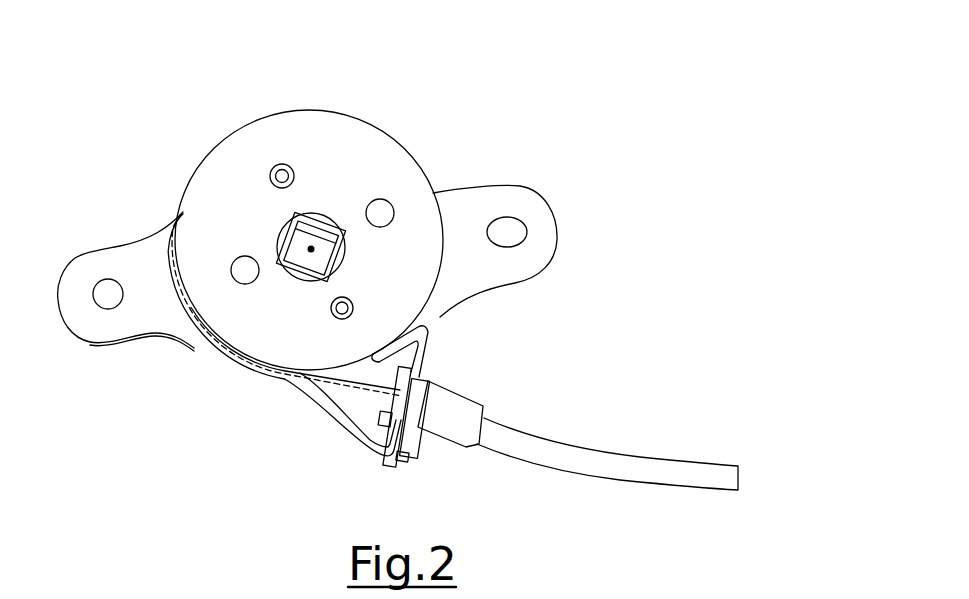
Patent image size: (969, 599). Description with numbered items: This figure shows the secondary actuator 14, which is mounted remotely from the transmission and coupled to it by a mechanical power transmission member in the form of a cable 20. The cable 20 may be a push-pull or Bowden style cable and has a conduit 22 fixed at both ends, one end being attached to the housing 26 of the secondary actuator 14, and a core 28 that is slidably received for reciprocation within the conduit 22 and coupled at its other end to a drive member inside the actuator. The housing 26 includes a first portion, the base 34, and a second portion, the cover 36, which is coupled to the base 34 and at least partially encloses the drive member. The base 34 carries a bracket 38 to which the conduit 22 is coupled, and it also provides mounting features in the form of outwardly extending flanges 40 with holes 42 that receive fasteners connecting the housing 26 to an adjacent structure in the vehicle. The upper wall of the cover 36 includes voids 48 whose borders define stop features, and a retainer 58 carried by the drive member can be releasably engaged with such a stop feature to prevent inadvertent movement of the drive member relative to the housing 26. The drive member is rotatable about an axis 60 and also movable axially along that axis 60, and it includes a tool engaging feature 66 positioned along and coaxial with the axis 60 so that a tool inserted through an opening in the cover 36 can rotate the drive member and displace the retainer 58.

The secondary actuator 14 is at (454, 102).
The cable 20 is at (643, 446).
The conduit 22 is at (535, 447).
The housing 26 is at (201, 149).
The core 28 is at (352, 380).
The base 34 is at (178, 330).
The cover 36 is at (318, 132).
The bracket 38 is at (422, 362).
The flanges 40 is at (95, 252).
The holes 42 is at (103, 298).
The voids 48 is at (380, 213).
The retainer 58 is at (284, 166).
The axis 60 is at (311, 249).
The tool engaging feature 66 is at (323, 231).